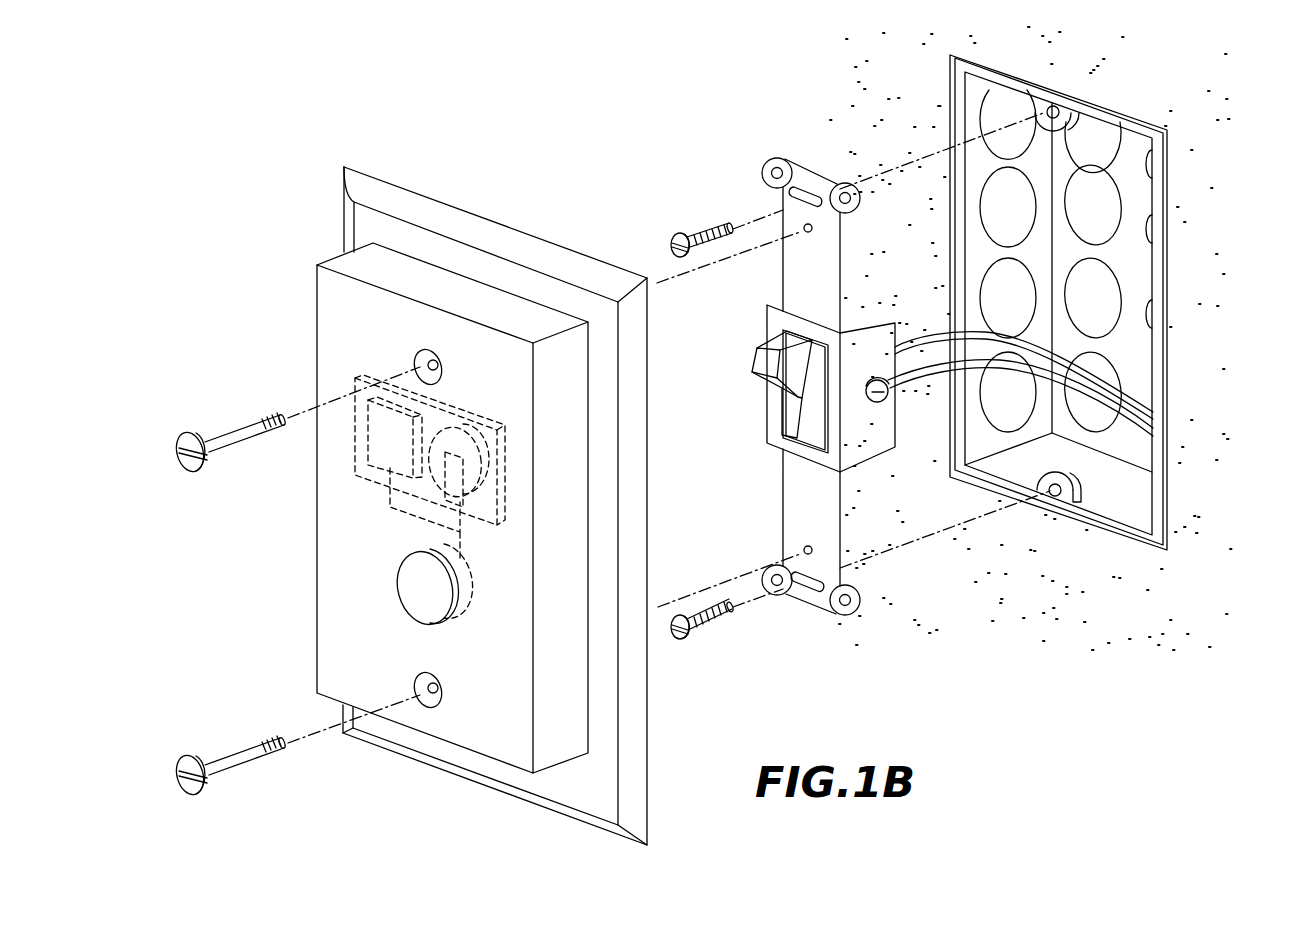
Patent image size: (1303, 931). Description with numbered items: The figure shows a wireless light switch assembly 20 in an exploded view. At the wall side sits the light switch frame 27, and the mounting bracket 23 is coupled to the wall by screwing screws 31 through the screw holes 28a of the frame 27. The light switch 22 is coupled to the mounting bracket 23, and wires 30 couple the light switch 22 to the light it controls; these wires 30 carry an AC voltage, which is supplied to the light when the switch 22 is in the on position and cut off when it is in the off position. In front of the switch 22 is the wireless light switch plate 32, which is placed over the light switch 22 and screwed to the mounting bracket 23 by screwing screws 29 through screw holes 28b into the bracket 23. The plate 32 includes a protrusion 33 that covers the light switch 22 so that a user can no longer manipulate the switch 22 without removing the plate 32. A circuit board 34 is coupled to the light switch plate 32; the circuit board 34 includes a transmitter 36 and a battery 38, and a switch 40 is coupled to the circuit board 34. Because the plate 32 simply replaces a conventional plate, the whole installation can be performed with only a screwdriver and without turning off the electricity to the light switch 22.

The wireless light switch assembly 20 is at (612, 92).
The light switch 22 is at (760, 360).
The mounting bracket 23 is at (795, 253).
The light switch frame 27 is at (1157, 270).
The screw holes 28a is at (1046, 110).
The screw holes 28b is at (436, 363).
The screws 29 is at (243, 428).
The wires 30 is at (1088, 410).
The screws 31 is at (711, 228).
The wireless light switch plate 32 is at (347, 146).
The protrusion 33 is at (336, 262).
The circuit board 34 is at (372, 492).
The transmitter 36 is at (378, 453).
The battery 38 is at (467, 438).
The switch 40 is at (417, 600).